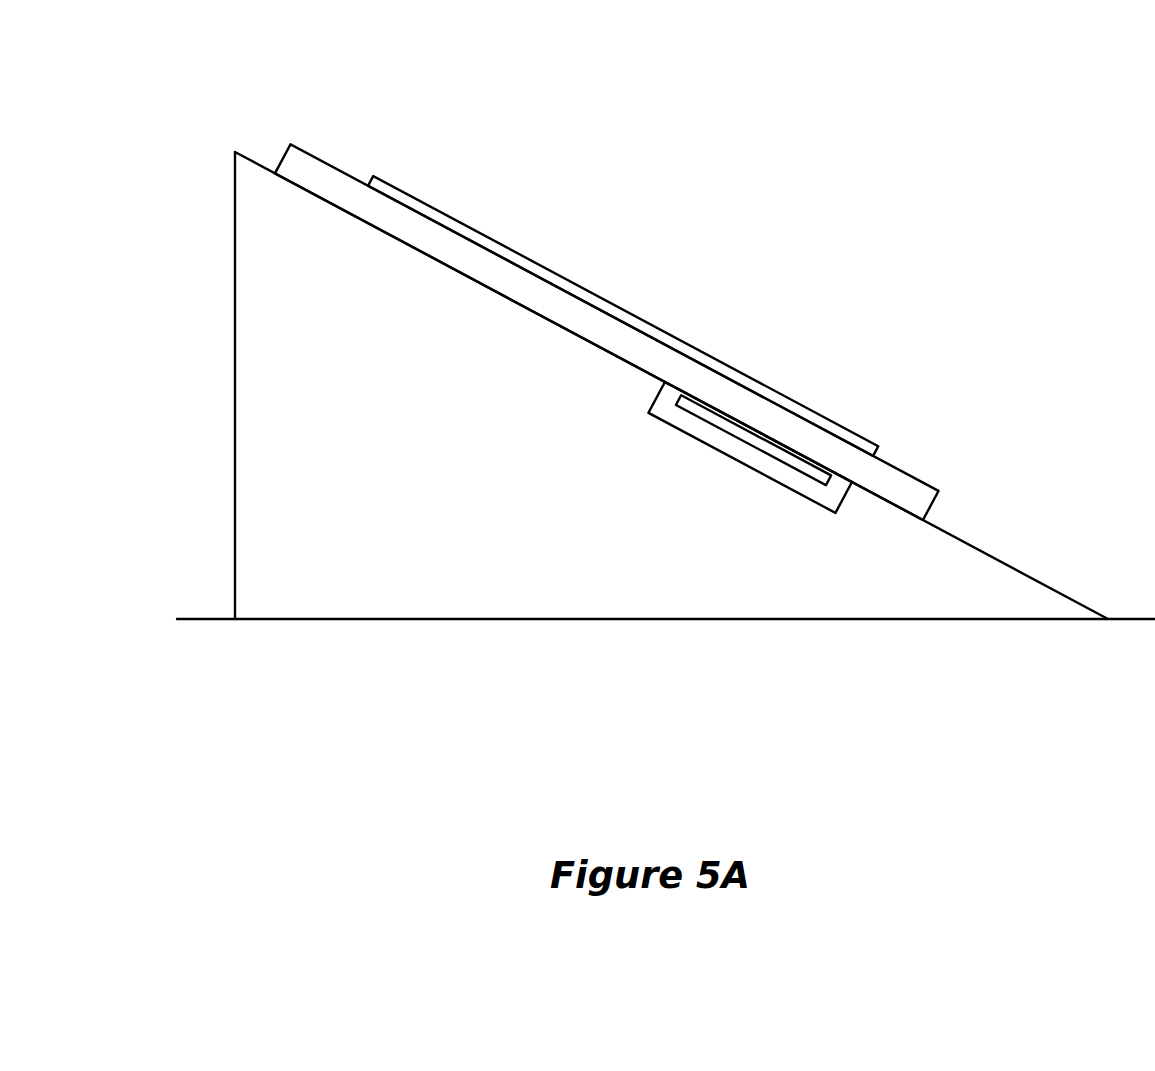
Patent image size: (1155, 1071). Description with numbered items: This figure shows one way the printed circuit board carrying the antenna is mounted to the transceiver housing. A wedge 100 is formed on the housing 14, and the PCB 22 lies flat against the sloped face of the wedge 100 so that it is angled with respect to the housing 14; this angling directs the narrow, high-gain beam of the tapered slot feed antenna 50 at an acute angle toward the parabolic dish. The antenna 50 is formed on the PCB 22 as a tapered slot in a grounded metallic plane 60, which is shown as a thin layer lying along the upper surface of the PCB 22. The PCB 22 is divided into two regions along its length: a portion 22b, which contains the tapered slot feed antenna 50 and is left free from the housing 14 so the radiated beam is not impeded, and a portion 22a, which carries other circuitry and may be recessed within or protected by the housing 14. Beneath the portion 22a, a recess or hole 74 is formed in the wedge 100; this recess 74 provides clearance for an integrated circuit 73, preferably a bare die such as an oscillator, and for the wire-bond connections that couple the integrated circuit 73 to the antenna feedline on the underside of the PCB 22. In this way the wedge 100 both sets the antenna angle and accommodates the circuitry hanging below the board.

The housing 14 is at (666, 681).
The wedge 100 is at (273, 505).
The tapered slot feed antenna 50 is at (503, 133).
The PCB 22 is at (585, 373).
The portion of the PCB 22a is at (738, 528).
The portion of the PCB 22b is at (448, 359).
The grounded metallic plane 60 is at (623, 316).
The recess or hole 74 is at (750, 447).
The integrated circuit 73 is at (753, 440).